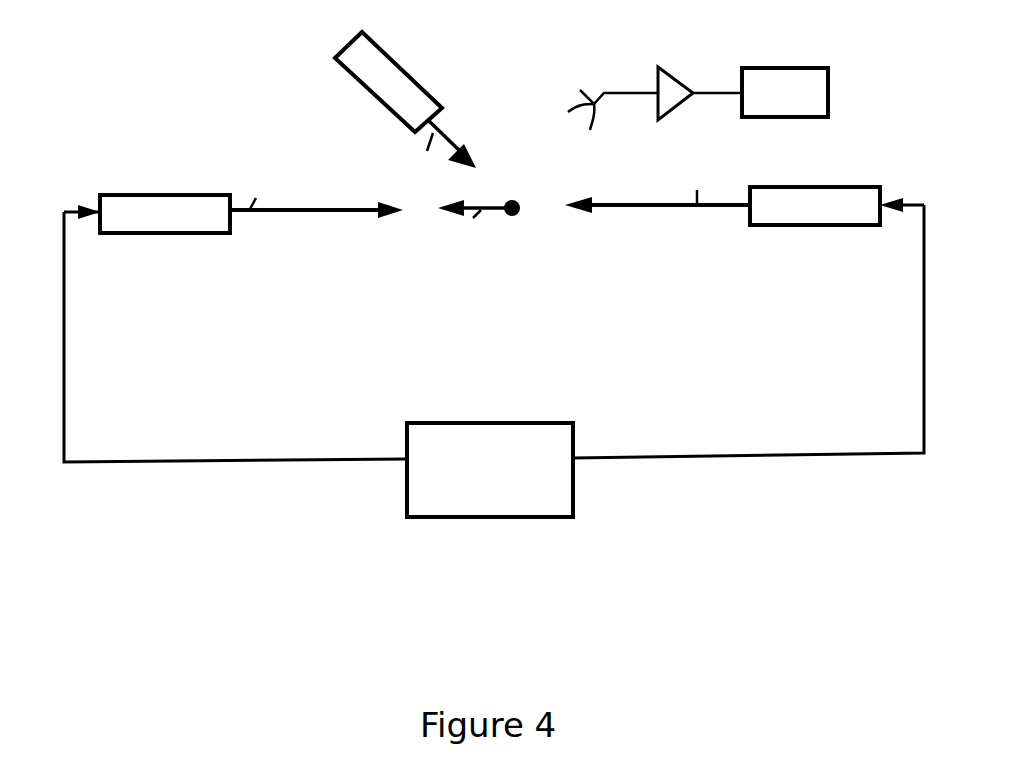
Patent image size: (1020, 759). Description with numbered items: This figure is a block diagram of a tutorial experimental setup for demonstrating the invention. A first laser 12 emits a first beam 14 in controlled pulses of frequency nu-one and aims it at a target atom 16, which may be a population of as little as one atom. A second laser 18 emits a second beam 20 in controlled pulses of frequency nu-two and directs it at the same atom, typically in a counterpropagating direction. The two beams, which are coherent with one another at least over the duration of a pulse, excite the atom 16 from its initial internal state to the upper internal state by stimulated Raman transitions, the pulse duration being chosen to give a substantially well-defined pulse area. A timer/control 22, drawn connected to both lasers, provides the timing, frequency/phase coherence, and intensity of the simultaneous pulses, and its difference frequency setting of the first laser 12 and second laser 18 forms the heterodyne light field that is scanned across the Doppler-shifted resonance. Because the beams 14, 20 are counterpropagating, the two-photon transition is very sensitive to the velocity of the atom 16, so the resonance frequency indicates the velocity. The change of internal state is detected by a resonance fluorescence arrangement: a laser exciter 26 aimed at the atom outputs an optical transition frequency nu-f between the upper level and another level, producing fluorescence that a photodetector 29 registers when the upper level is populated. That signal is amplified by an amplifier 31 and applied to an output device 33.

The first laser 12 is at (143, 234).
The first beam 14 is at (313, 213).
The target atom 16 is at (513, 201).
The second laser 18 is at (855, 226).
The second beam 20 is at (668, 208).
The timer/control 22 is at (470, 517).
The laser exciter 26 is at (356, 82).
The photodetector 29 is at (604, 97).
The amplifier 31 is at (668, 67).
The output device 33 is at (792, 67).